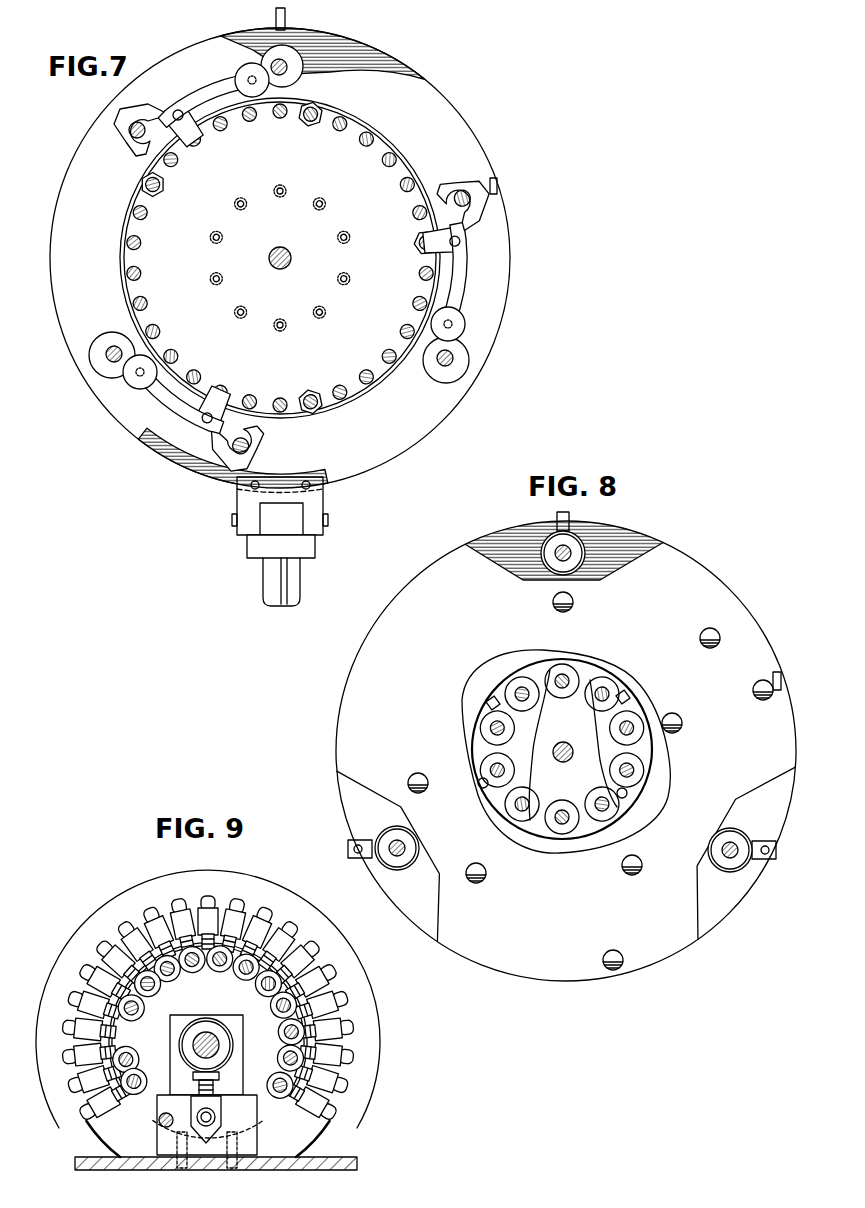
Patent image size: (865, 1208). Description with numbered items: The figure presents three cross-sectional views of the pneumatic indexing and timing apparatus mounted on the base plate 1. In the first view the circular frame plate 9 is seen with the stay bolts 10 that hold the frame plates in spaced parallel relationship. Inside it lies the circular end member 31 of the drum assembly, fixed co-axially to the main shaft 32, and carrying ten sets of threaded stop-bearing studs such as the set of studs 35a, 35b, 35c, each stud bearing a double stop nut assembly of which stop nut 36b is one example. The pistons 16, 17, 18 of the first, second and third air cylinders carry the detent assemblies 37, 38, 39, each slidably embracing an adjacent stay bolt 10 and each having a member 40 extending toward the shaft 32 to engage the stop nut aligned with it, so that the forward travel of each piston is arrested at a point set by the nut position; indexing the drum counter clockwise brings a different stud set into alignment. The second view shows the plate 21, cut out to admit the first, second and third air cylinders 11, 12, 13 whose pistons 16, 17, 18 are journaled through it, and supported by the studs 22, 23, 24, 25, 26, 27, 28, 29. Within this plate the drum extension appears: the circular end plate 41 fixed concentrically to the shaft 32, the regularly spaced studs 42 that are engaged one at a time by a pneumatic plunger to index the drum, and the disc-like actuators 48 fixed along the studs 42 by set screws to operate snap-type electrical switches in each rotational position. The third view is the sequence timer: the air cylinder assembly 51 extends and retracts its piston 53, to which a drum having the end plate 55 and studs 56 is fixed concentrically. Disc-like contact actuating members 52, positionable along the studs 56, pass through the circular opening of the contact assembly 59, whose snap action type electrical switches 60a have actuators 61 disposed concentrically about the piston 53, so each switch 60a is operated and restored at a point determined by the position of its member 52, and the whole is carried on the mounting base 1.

In FIG. 9, the mounting base 1 is at (355, 1160).
In FIG. 7, the circular plate 9 is at (494, 352).
In FIG. 7, the stay bolt 10 is at (122, 130).
In FIG. 8, the first air cylinder 11 is at (548, 582).
In FIG. 8, the second air cylinder 12 is at (716, 834).
In FIG. 8, the third air cylinder 13 is at (420, 852).
In FIG. 7, the piston 16 is at (295, 72).
In FIG. 8, the piston 16 is at (576, 545).
In FIG. 7, the piston 17 is at (440, 365).
In FIG. 8, the piston 17 is at (733, 858).
In FIG. 7, the piston 18 is at (113, 345).
In FIG. 8, the piston 18 is at (400, 845).
In FIG. 8, the plate 21 is at (366, 642).
In FIG. 8, the stud 22 is at (575, 603).
In FIG. 8, the stud 23 is at (710, 630).
In FIG. 8, the stud 24 is at (763, 700).
In FIG. 8, the stud 25 is at (678, 730).
In FIG. 8, the stud 26 is at (635, 874).
In FIG. 8, the stud 27 is at (604, 959).
In FIG. 8, the stud 28 is at (478, 884).
In FIG. 8, the stud 29 is at (418, 772).
In FIG. 7, the circular end member 31 is at (290, 166).
In FIG. 8, the main shaft 32 is at (563, 742).
In FIG. 7, the stop-bearing stud 35a is at (197, 148).
In FIG. 7, the stop-bearing stud 35b is at (416, 240).
In FIG. 7, the stop-bearing stud 35c is at (224, 395).
In FIG. 7, the stop nut 36b is at (420, 256).
In FIG. 7, the detent assembly 37 is at (262, 55).
In FIG. 7, the detent assembly 38 is at (455, 380).
In FIG. 7, the detent assembly 39 is at (100, 365).
In FIG. 7, the member 40 is at (204, 94).
In FIG. 8, the circular end plate 41 is at (575, 793).
In FIG. 8, the stud 42 is at (462, 712).
In FIG. 8, the disc-like actuator 48 is at (518, 750).
In FIG. 9, the air cylinder assembly 51 is at (207, 996).
In FIG. 9, the contact actuating member 52 is at (285, 1045).
In FIG. 9, the piston 53 is at (222, 1050).
In FIG. 9, the end plate 55 is at (163, 1067).
In FIG. 9, the stud 56 is at (168, 980).
In FIG. 9, the contact assembly 59 is at (318, 1122).
In FIG. 9, the snap action type electrical switch 60a is at (214, 878).
In FIG. 9, the actuator 61 is at (117, 1090).